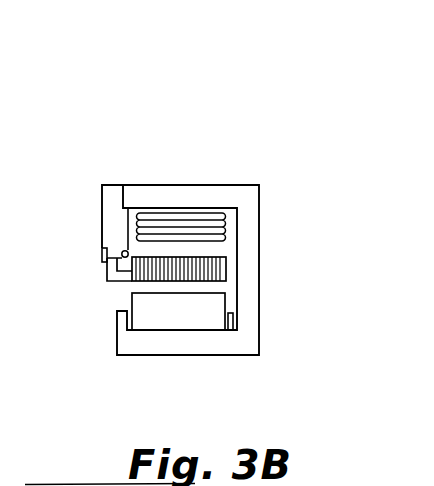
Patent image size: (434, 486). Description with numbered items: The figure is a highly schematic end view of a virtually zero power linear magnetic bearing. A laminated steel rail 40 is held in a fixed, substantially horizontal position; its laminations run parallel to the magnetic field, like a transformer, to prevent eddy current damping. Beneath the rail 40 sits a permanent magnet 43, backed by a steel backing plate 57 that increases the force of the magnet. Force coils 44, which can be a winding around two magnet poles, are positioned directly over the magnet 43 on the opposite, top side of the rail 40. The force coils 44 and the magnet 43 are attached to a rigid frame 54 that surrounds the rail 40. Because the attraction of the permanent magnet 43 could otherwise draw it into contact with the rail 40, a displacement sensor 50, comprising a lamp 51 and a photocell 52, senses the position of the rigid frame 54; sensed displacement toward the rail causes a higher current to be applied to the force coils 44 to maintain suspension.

The laminated steel rail 40 is at (227, 273).
The permanent magnet 43 is at (224, 304).
The force coils 44 is at (227, 227).
The displacement sensor 50 is at (86, 234).
The lamp 51 is at (123, 250).
The photocell 52 is at (101, 256).
The rigid frame 54 is at (252, 186).
The steel backing plate 57 is at (157, 333).